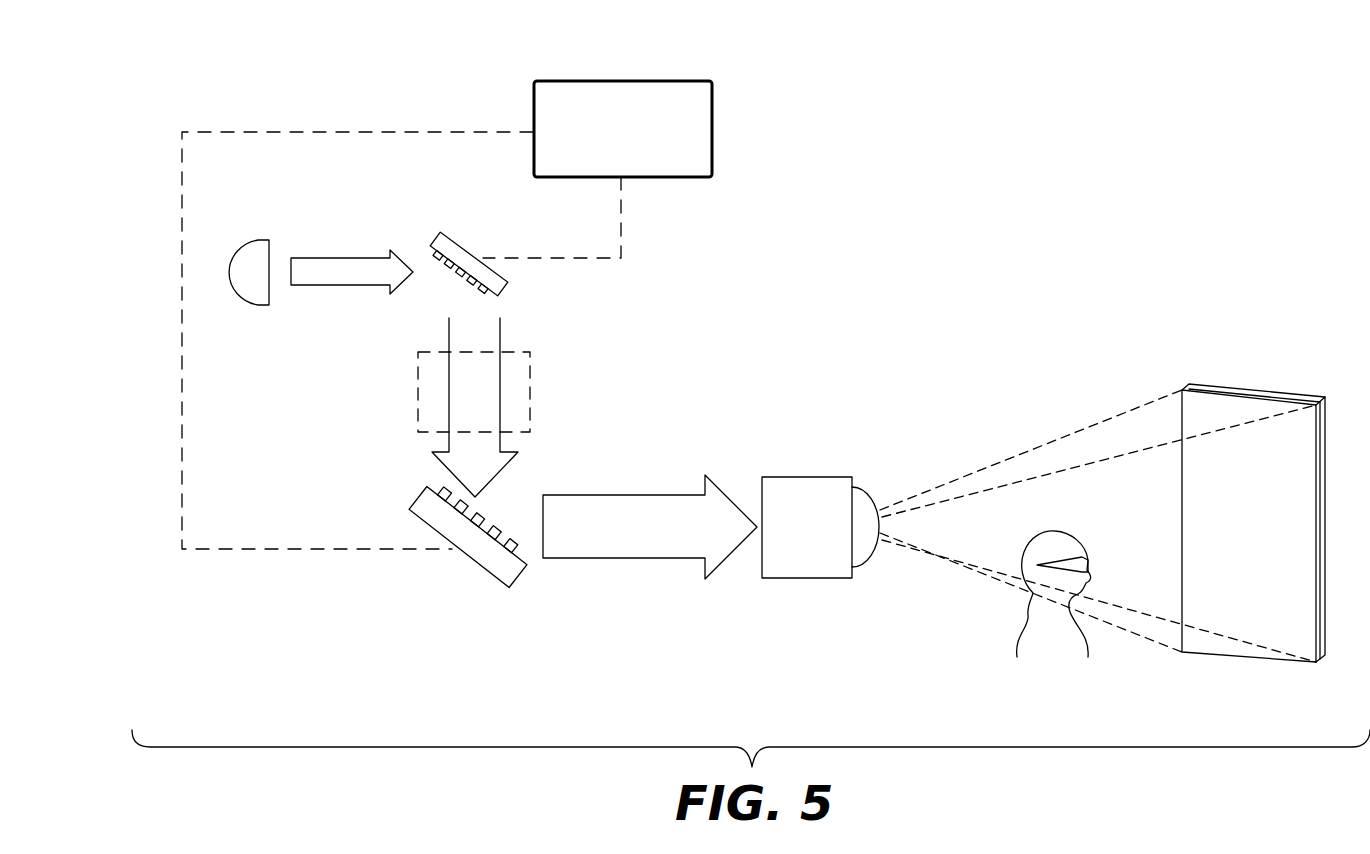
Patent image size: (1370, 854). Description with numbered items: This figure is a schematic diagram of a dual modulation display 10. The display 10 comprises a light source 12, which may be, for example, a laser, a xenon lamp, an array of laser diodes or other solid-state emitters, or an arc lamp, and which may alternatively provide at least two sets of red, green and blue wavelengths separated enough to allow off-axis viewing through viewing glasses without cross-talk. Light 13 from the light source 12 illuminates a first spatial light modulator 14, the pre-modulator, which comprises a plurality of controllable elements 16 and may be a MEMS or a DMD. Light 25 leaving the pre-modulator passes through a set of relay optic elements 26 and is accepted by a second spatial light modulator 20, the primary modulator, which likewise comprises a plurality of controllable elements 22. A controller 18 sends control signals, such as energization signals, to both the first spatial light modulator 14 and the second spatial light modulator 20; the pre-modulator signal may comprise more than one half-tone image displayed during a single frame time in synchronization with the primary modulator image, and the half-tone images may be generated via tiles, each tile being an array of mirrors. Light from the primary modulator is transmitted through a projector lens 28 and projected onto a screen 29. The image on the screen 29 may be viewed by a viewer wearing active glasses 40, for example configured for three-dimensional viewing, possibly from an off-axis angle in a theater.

The display 10 is at (252, 90).
The light source 12 is at (248, 252).
The light 13 is at (333, 258).
The first spatial light modulator 14 is at (448, 245).
The controllable elements 16 is at (437, 262).
The controller 18 is at (533, 118).
The second spatial light modulator 20 is at (414, 497).
The controllable elements 22 is at (515, 545).
The light 25 is at (505, 476).
The relay optic elements 26 is at (533, 378).
The projector lens 28 is at (820, 477).
The screen 29 is at (1212, 388).
The active glasses 40 is at (1088, 558).